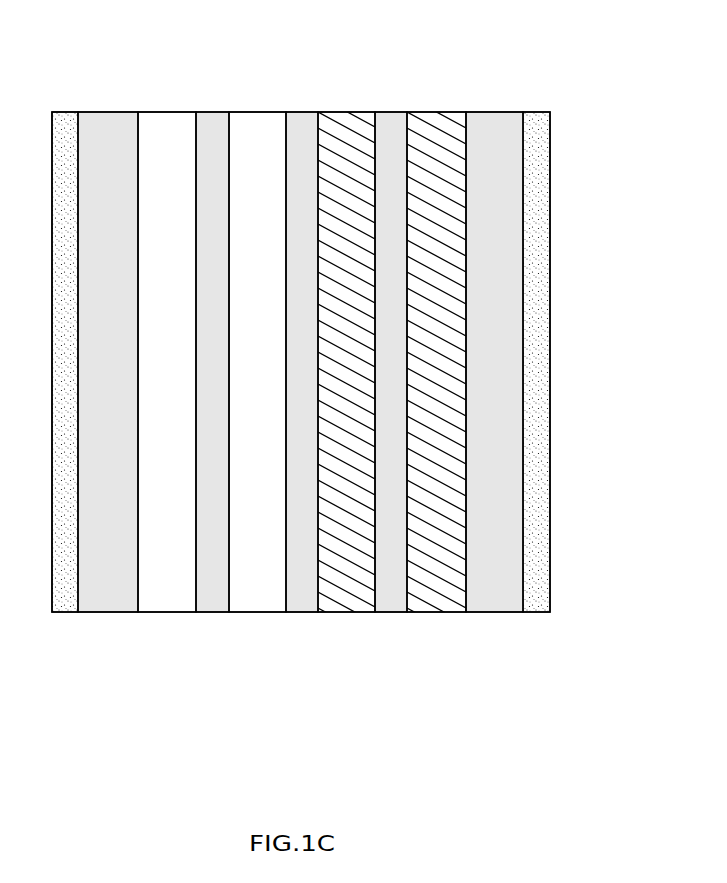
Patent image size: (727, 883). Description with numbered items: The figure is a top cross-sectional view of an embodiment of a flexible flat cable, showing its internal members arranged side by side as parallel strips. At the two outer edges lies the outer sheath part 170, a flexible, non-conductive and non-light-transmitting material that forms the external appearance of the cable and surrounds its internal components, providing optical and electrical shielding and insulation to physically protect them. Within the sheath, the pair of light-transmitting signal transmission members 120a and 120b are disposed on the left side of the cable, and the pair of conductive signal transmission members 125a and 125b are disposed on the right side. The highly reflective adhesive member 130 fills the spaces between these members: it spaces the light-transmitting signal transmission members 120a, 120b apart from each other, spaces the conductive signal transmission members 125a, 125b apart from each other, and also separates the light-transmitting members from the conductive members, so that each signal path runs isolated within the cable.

The outer sheath part 170 is at (65, 118).
The highly reflective adhesive member 130 is at (107, 118).
The light-transmitting signal transmission member 120a is at (166, 598).
The light-transmitting signal transmission member 120b is at (259, 598).
The conductive signal transmission member 125a is at (345, 598).
The conductive signal transmission member 125b is at (437, 598).